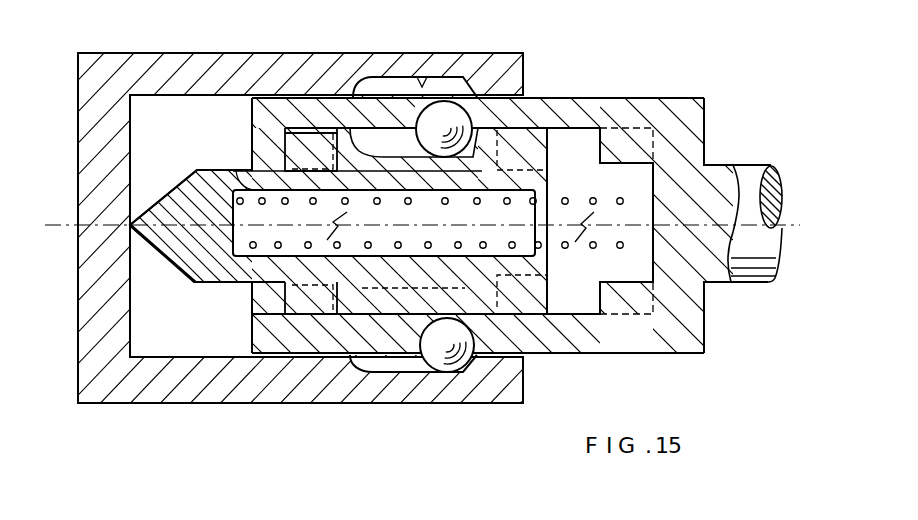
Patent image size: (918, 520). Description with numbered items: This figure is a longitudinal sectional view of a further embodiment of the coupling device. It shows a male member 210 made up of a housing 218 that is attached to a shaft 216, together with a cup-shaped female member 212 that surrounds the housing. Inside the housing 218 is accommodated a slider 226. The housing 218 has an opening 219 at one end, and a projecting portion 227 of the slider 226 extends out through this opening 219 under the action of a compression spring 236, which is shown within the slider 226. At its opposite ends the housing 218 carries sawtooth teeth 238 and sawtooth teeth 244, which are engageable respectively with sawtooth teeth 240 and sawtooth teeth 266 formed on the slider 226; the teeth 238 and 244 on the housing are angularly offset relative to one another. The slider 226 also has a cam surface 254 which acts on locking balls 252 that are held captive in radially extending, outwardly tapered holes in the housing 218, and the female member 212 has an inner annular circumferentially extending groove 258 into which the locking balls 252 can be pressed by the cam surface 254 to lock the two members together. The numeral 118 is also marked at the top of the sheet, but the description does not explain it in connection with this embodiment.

The connecting element 118 is at (299, 0).
The male member 210 is at (551, 92).
The female member 212 is at (232, 65).
The shaft 216 is at (752, 180).
The housing 218 is at (578, 120).
The opening 219 is at (238, 172).
The slider 226 is at (377, 270).
The projecting portion 227 is at (197, 263).
The compression spring 236 is at (567, 250).
The sawtooth teeth 238 is at (630, 145).
The sawtooth teeth 240 is at (530, 320).
The sawtooth teeth 244 is at (316, 287).
The locking balls 252 is at (452, 113).
The cam surface 254 is at (388, 157).
The groove 258 is at (427, 77).
The sawtooth teeth 266 is at (302, 290).